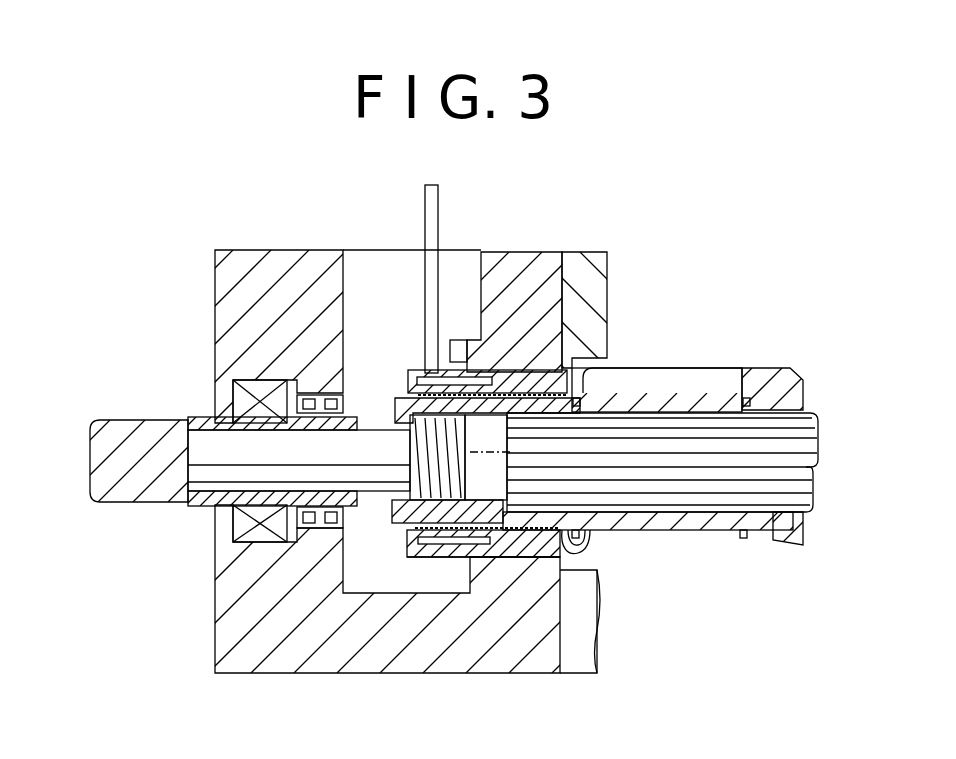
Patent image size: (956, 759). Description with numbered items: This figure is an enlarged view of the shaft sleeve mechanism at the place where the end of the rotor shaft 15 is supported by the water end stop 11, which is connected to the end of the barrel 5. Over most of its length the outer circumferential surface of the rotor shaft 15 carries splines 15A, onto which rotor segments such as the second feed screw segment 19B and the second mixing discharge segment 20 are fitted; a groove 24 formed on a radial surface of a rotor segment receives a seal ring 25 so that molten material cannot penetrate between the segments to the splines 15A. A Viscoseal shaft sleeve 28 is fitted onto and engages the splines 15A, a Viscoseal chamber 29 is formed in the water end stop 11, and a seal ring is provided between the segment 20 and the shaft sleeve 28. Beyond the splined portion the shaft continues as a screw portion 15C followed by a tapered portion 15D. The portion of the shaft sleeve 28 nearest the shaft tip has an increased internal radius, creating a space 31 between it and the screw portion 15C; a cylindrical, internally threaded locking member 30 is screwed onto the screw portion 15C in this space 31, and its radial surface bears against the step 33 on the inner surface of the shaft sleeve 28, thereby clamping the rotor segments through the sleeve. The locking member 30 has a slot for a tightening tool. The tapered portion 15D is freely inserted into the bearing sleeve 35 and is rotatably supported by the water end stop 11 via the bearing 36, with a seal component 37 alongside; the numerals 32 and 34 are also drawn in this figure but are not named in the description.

The barrel 5 is at (592, 265).
The water end stop 11 is at (541, 275).
The rotor shaft 15 is at (767, 440).
The splines 15A is at (788, 530).
The screw portion 15C is at (405, 458).
The tapered portion 15D is at (203, 443).
The second feed screw segment 19B is at (760, 378).
The second mixing discharge segment 20 is at (683, 395).
The groove 24 is at (575, 395).
The seal ring 25 is at (566, 538).
The Viscoseal shaft sleeve 28 is at (537, 380).
The Viscoseal chamber 29 is at (500, 365).
The locking member 30 is at (427, 510).
The space 31 is at (443, 532).
The seal bracket 32 is at (615, 523).
The step 33 is at (503, 532).
The mounting plate 34 is at (402, 405).
The bearing sleeve 35 is at (118, 437).
The bearing 36 is at (237, 522).
The seal component 37 is at (338, 403).